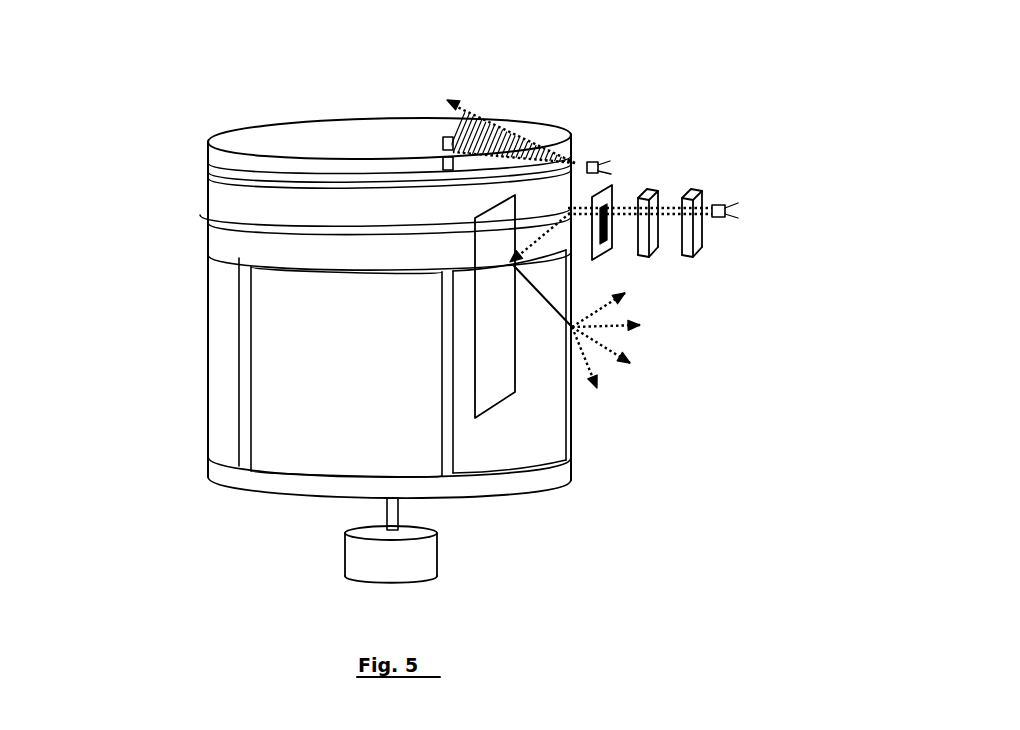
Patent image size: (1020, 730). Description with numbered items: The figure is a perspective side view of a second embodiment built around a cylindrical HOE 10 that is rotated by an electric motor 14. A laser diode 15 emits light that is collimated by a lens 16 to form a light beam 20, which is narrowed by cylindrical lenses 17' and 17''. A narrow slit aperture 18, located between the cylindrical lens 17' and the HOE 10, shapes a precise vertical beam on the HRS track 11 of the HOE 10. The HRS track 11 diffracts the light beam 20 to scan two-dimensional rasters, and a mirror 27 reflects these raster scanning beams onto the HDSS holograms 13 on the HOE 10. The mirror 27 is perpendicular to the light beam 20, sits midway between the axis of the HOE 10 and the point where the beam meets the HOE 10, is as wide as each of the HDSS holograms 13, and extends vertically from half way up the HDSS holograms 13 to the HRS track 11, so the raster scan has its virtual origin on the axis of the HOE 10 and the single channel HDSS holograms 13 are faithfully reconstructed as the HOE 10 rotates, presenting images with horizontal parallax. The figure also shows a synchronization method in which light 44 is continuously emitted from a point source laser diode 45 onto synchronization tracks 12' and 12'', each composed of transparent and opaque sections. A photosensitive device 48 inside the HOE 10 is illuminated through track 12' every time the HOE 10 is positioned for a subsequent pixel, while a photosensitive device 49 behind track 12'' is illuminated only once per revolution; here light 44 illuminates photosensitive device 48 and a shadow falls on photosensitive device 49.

The HOE 10 is at (224, 136).
The HRS track 11 is at (207, 215).
The synchronization track 12' is at (319, 177).
The synchronization track 12'' is at (325, 215).
The HDSS holograms 13 is at (287, 478).
The electric motor 14 is at (442, 560).
The laser diode 15 is at (726, 205).
The lens 16 is at (716, 205).
The cylindrical lens 17' is at (677, 262).
The cylindrical lens 17'' is at (728, 246).
The narrow slit aperture 18 is at (612, 186).
The light beam 20 is at (638, 188).
The mirror 27 is at (480, 213).
The light 44 is at (517, 125).
The laser diode 45 is at (593, 160).
The photosensitive device 48 is at (444, 143).
The photosensitive device 49 is at (444, 163).